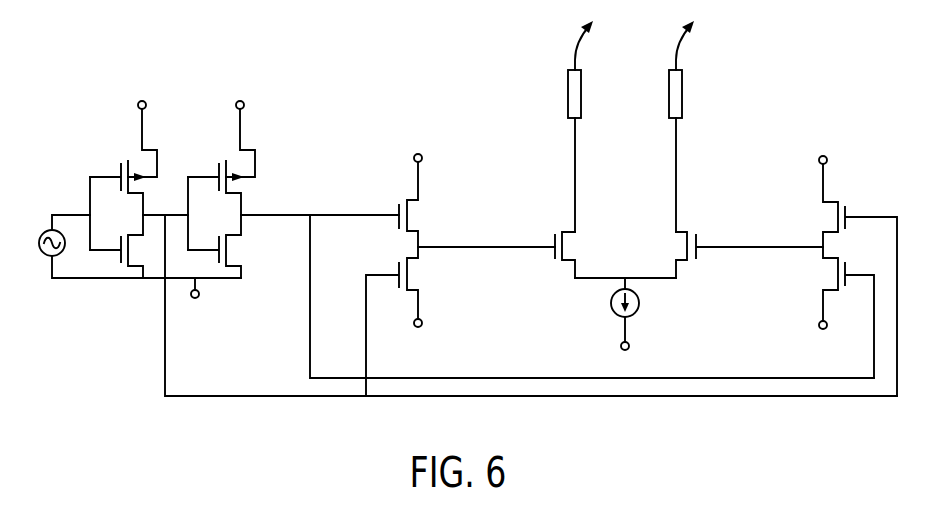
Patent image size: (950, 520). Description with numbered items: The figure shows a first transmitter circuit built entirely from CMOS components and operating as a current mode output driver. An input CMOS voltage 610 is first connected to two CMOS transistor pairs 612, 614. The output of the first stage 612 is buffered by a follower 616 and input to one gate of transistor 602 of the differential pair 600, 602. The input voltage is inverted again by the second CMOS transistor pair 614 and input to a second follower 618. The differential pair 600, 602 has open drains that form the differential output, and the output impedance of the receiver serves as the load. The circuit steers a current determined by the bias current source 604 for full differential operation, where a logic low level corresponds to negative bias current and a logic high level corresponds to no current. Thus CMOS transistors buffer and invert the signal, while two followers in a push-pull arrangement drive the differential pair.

The differential pair transistor 600 is at (582, 220).
The differential pair transistor 602 is at (685, 220).
The bias current source 604 is at (640, 303).
The input CMOS voltage 610 is at (42, 232).
The first CMOS transistor pair 612 is at (170, 138).
The second CMOS transistor pair 614 is at (267, 138).
The follower 616 is at (843, 200).
The second follower 618 is at (443, 175).